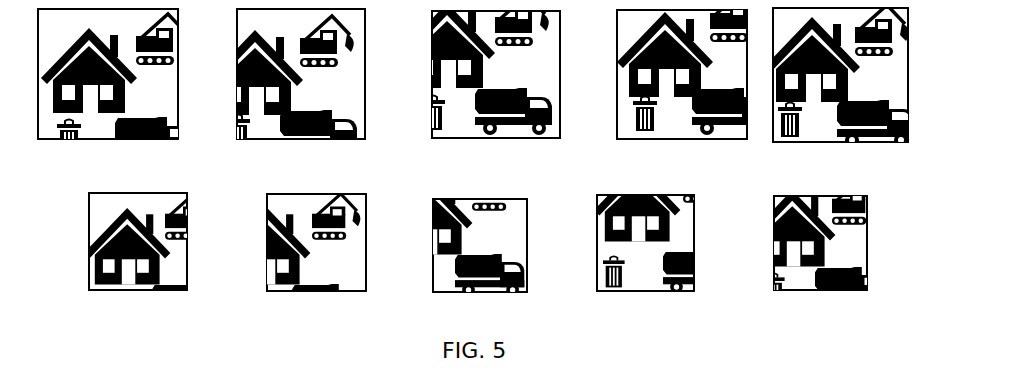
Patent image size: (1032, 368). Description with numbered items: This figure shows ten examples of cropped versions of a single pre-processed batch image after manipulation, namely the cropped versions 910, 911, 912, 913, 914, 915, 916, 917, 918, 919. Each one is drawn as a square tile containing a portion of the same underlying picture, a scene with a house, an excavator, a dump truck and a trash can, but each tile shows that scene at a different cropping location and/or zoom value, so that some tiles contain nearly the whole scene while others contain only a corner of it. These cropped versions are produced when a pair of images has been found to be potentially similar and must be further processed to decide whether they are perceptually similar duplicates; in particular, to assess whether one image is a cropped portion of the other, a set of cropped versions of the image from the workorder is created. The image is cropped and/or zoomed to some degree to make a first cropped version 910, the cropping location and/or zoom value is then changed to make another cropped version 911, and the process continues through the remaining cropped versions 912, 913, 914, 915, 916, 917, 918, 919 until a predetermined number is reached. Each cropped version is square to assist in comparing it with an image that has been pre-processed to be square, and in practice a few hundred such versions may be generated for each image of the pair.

The cropped version 910 is at (175, 72).
The cropped version 911 is at (238, 103).
The cropped version 912 is at (432, 77).
The cropped version 913 is at (615, 72).
The cropped version 914 is at (840, 142).
The cropped version 915 is at (88, 258).
The cropped version 916 is at (267, 243).
The cropped version 917 is at (432, 265).
The cropped version 918 is at (595, 263).
The cropped version 919 is at (773, 260).